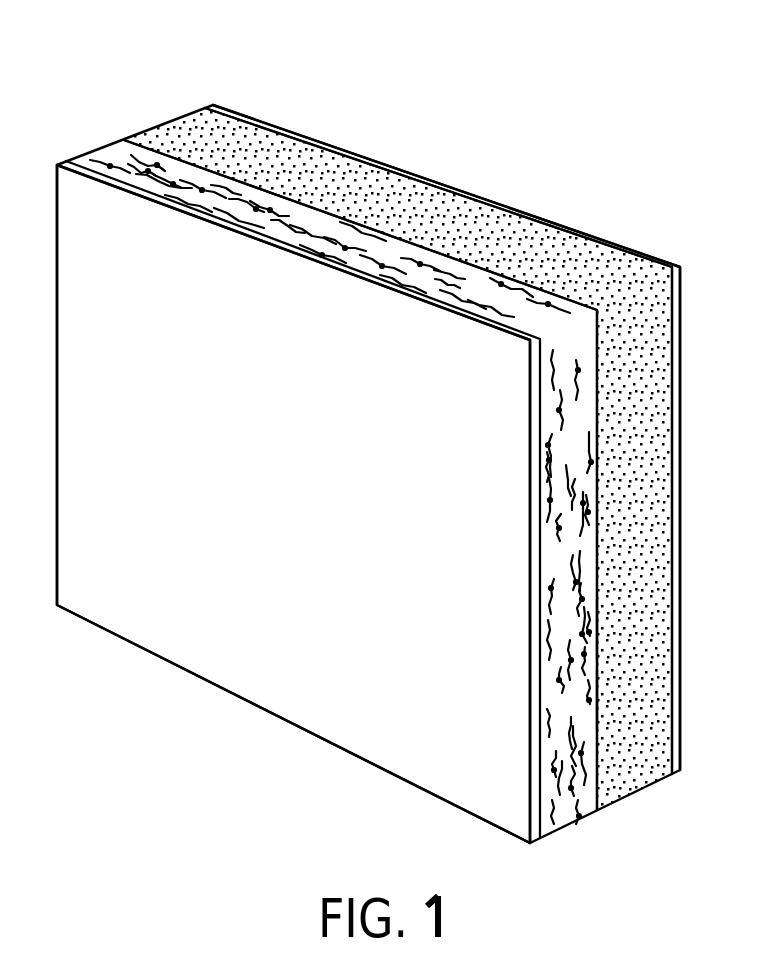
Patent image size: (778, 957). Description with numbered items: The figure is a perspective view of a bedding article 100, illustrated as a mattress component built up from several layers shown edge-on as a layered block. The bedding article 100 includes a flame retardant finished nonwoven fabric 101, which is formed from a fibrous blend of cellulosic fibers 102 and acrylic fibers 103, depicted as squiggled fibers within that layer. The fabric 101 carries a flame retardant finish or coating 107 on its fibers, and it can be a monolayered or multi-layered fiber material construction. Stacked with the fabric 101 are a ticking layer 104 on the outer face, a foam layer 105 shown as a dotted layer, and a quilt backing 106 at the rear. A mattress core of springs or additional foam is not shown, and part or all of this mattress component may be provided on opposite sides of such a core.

The bedding article 100 is at (582, 84).
The flame retardant finished nonwoven fabric 101 is at (100, 150).
The cellulosic fibers 102 is at (592, 632).
The acrylic fibers 103 is at (592, 700).
The ticking layer 104 is at (59, 164).
The foam layer 105 is at (167, 125).
The quilt backing 106 is at (250, 113).
The flame retardant finish or coating 107 is at (591, 516).